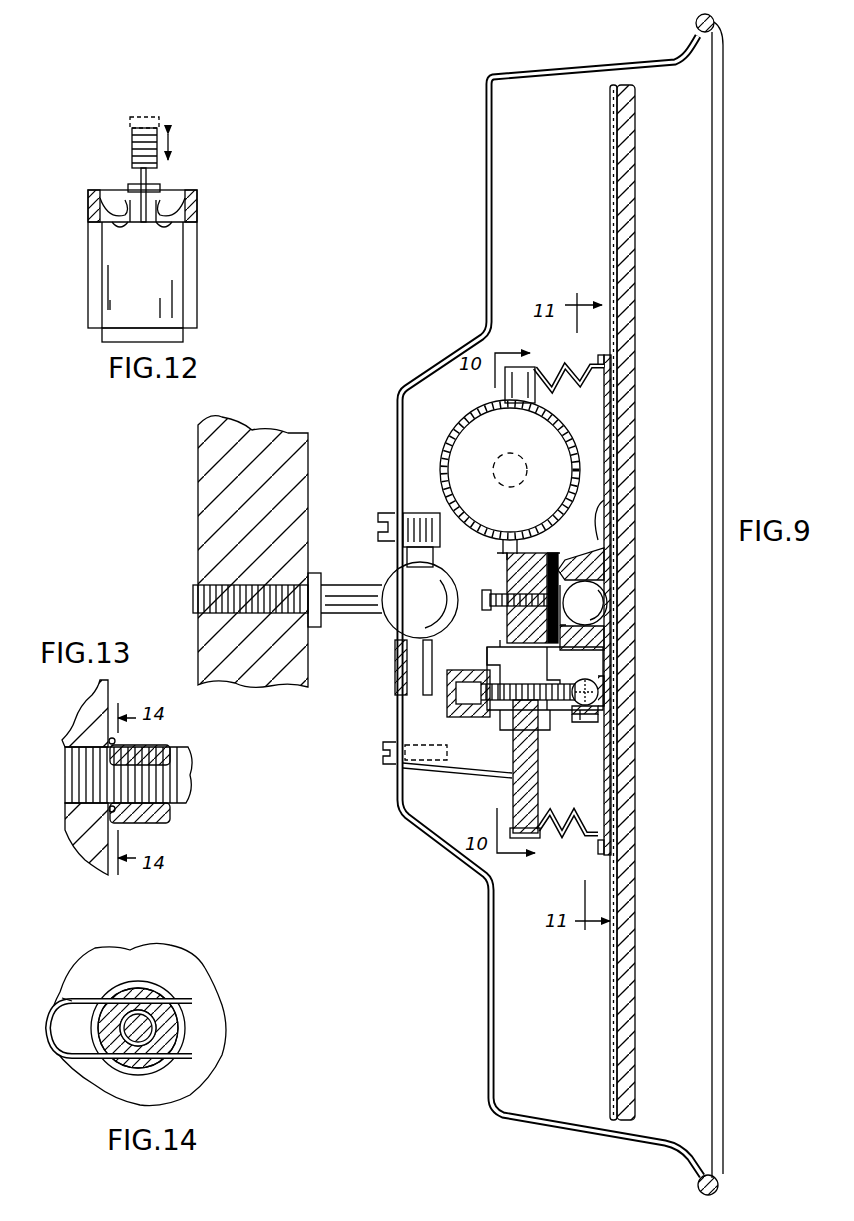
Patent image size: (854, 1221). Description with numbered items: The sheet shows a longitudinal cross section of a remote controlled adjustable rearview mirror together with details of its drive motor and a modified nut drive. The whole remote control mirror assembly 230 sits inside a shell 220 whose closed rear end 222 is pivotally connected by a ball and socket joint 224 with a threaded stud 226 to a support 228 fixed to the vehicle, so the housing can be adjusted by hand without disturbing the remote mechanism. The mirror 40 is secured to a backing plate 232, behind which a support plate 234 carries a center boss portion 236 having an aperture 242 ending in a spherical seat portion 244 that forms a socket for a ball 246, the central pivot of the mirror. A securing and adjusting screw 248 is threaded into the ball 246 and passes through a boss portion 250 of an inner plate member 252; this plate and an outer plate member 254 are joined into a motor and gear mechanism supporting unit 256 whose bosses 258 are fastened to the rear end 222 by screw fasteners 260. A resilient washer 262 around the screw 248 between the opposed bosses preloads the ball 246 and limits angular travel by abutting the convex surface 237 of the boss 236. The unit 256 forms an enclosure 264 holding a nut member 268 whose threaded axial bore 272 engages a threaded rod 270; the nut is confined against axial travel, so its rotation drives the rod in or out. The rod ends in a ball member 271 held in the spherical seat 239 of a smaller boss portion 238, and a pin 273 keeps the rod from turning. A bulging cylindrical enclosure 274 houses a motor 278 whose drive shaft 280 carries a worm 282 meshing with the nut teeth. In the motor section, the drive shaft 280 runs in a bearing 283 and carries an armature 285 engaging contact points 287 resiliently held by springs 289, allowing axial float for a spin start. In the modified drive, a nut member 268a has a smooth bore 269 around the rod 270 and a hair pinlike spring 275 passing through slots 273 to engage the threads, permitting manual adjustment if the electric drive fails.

In FIG. 9, the mirror 40 is at (627, 260).
In FIG. 9, the shell 220 is at (572, 76).
In FIG. 9, the closed rear end 222 is at (395, 413).
In FIG. 9, the ball and socket joint 224 is at (384, 582).
In FIG. 9, the threaded stud 226 is at (342, 615).
In FIG. 9, the support 228 is at (205, 535).
In FIG. 9, the remote control mirror assembly 230 is at (455, 390).
In FIG. 9, the backing plate 232 is at (608, 204).
In FIG. 9, the support plate 234 is at (613, 418).
In FIG. 9, the center boss portion 236 is at (562, 578).
In FIG. 9, the convex surface 237 is at (612, 530).
In FIG. 9, the smaller boss portion 238 is at (606, 680).
In FIG. 9, the spherical seat 239 is at (592, 718).
In FIG. 9, the aperture 242 is at (604, 592).
In FIG. 9, the spherical seat portion 244 is at (610, 636).
In FIG. 9, the ball 246 is at (603, 606).
In FIG. 9, the securing and adjusting screw 248 is at (502, 628).
In FIG. 9, the boss portion 250 is at (522, 562).
In FIG. 9, the inner plate member 252 is at (580, 492).
In FIG. 9, the outer plate member 254 is at (490, 594).
In FIG. 9, the motor and gear mechanism supporting unit 256 is at (452, 712).
In FIG. 9, the bosses 258 is at (453, 770).
In FIG. 9, the screw fasteners 260 is at (390, 765).
In FIG. 9, the resilient washer 262 is at (605, 560).
In FIG. 9, the enclosure 264 is at (446, 690).
In FIG. 9, the nut member 268 is at (520, 716).
In FIG. 13, the nut member 268a is at (70, 710).
In FIG. 14, the nut member 268a is at (205, 982).
In FIG. 13, the smooth bore 269 is at (168, 762).
In FIG. 9, the threaded rod 270 is at (548, 690).
In FIG. 13, the threaded rod 270 is at (185, 790).
In FIG. 14, the threaded rod 270 is at (158, 1030).
In FIG. 9, the ball member 271 is at (600, 704).
In FIG. 9, the axial bore 272 is at (468, 737).
In FIG. 9, the pin 273 is at (582, 712).
In FIG. 13, the pin 273 is at (114, 744).
In FIG. 14, the pin 273 is at (150, 1000).
In FIG. 9, the cylindrical enclosure 274 is at (442, 455).
In FIG. 13, the hair pinlike spring 275 is at (126, 818).
In FIG. 14, the hair pinlike spring 275 is at (62, 998).
In FIG. 12, the motor 278 is at (90, 300).
In FIG. 12, the drive shaft 280 is at (132, 180).
In FIG. 12, the worm 282 is at (128, 138).
In FIG. 12, the bearing 283 is at (150, 190).
In FIG. 12, the armature 285 is at (146, 230).
In FIG. 12, the contact points 287 is at (115, 226).
In FIG. 12, the springs 289 is at (90, 215).